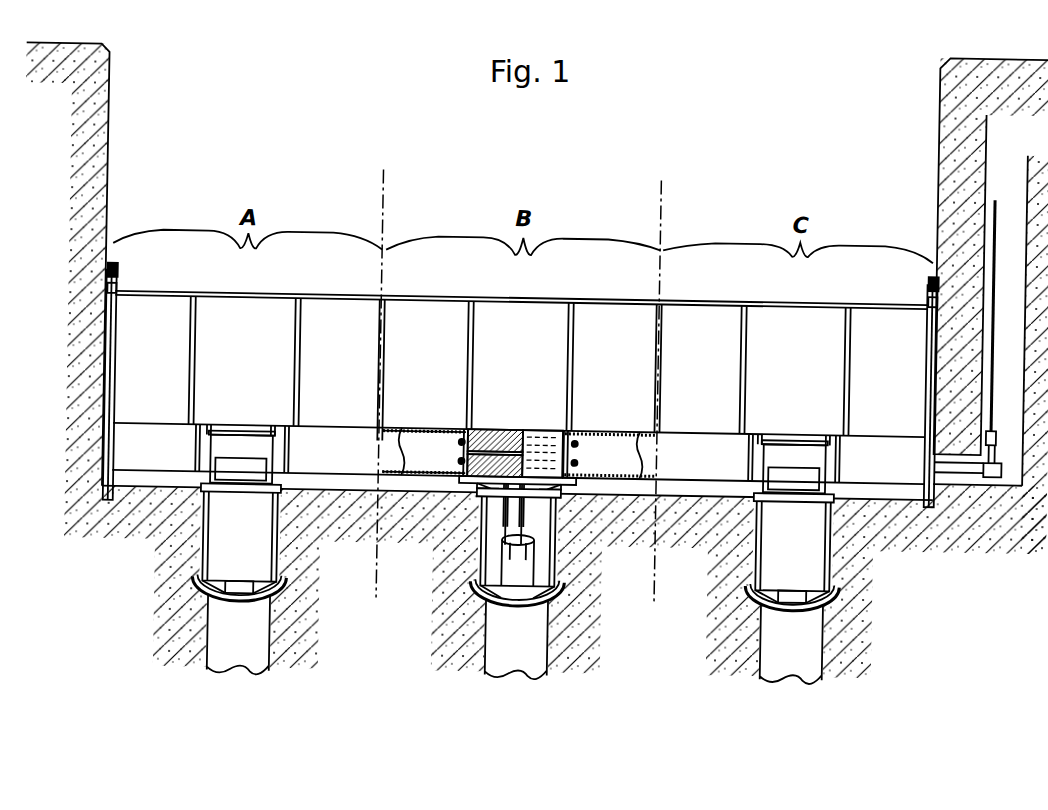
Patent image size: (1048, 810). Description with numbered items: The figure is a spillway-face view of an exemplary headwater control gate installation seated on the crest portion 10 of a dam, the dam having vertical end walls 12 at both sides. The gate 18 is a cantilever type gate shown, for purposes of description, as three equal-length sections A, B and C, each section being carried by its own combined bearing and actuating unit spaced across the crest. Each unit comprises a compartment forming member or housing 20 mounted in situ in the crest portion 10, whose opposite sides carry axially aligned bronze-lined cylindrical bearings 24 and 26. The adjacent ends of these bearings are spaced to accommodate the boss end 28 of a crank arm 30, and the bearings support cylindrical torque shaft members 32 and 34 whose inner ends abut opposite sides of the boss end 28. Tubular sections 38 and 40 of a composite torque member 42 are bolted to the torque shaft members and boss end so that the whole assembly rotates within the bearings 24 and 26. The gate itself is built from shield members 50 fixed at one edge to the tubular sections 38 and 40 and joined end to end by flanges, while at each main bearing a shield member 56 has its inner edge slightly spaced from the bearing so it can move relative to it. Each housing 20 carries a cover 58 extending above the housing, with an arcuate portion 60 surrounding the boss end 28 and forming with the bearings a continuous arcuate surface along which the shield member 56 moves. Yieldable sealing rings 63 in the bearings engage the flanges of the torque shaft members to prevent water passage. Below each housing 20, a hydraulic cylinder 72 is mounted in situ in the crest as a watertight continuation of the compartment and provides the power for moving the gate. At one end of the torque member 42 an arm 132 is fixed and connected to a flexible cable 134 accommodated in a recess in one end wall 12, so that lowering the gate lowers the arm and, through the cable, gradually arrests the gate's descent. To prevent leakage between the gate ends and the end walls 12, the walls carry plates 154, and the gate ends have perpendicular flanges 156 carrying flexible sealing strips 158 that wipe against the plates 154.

The crest portion 10 is at (910, 590).
The vertical ends or walls 12 is at (533, 298).
The gate 18 is at (507, 301).
The compartment forming member or housing 20 is at (275, 546).
The cylindrical bearing 24 is at (209, 430).
The cylindrical bearing 26 is at (273, 430).
The boss end 28 is at (537, 431).
The crank arm 30 is at (505, 521).
The torque shaft member 32 is at (500, 431).
The torque shaft member 34 is at (578, 460).
The tubular section 38 is at (428, 430).
The tubular section 40 is at (593, 432).
The composite torque member 42 is at (688, 480).
The shield member 50 is at (402, 318).
The shield member 56 is at (258, 310).
The cover 58 is at (240, 445).
The arcuate portion 60 is at (242, 436).
The yieldable sealing ring 63 is at (197, 440).
The hydraulic cylinder 72 is at (255, 622).
The arm 132 is at (993, 424).
The flexible cable 134 is at (991, 200).
The plate 154 is at (104, 342).
The perpendicular flange 156 is at (114, 298).
The flexible sealing strip 158 is at (114, 272).